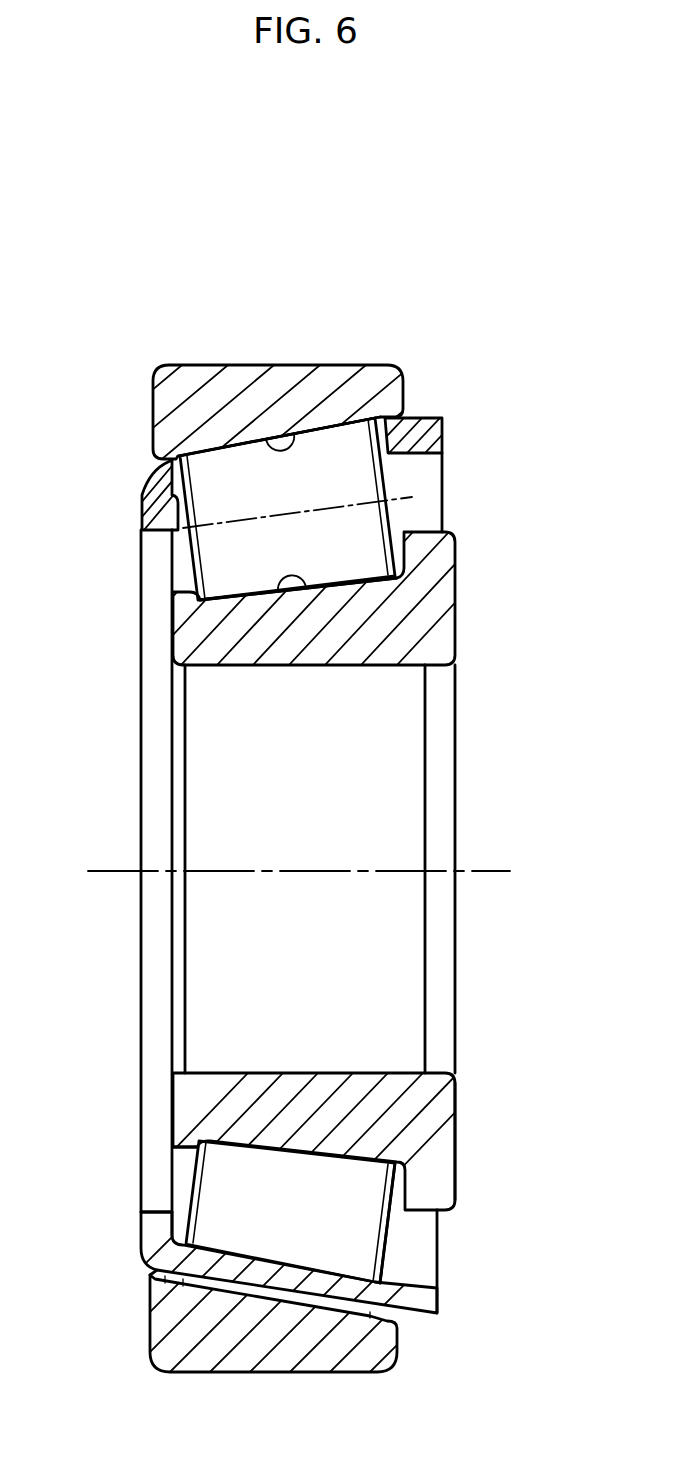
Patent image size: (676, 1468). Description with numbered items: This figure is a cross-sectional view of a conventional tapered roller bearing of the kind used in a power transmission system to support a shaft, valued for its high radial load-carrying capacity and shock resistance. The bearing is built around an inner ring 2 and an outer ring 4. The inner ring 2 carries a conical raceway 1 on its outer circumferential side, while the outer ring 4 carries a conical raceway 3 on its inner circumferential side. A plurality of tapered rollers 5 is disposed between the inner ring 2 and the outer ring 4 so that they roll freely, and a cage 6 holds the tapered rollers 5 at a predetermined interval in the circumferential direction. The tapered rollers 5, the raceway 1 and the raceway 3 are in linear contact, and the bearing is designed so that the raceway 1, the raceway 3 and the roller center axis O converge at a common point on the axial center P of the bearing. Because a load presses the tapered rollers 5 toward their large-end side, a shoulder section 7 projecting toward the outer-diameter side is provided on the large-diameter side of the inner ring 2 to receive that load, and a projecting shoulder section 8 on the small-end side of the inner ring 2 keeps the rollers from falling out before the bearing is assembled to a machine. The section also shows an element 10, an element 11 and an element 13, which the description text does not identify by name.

The conical raceway 1 is at (305, 600).
The inner ring 2 is at (420, 620).
The conical raceway 3 is at (303, 442).
The outer ring 4 is at (232, 380).
The tapered rollers 5 is at (393, 504).
The cage 6 is at (422, 437).
The shoulder section 7 is at (427, 1188).
The projecting shoulder section 8 is at (173, 1158).
The large rib face 10 is at (455, 1128).
The housing cover 11 is at (170, 1095).
The roller large end face 13 is at (398, 1178).
The roller center axis O is at (315, 507).
The axial center P is at (470, 871).